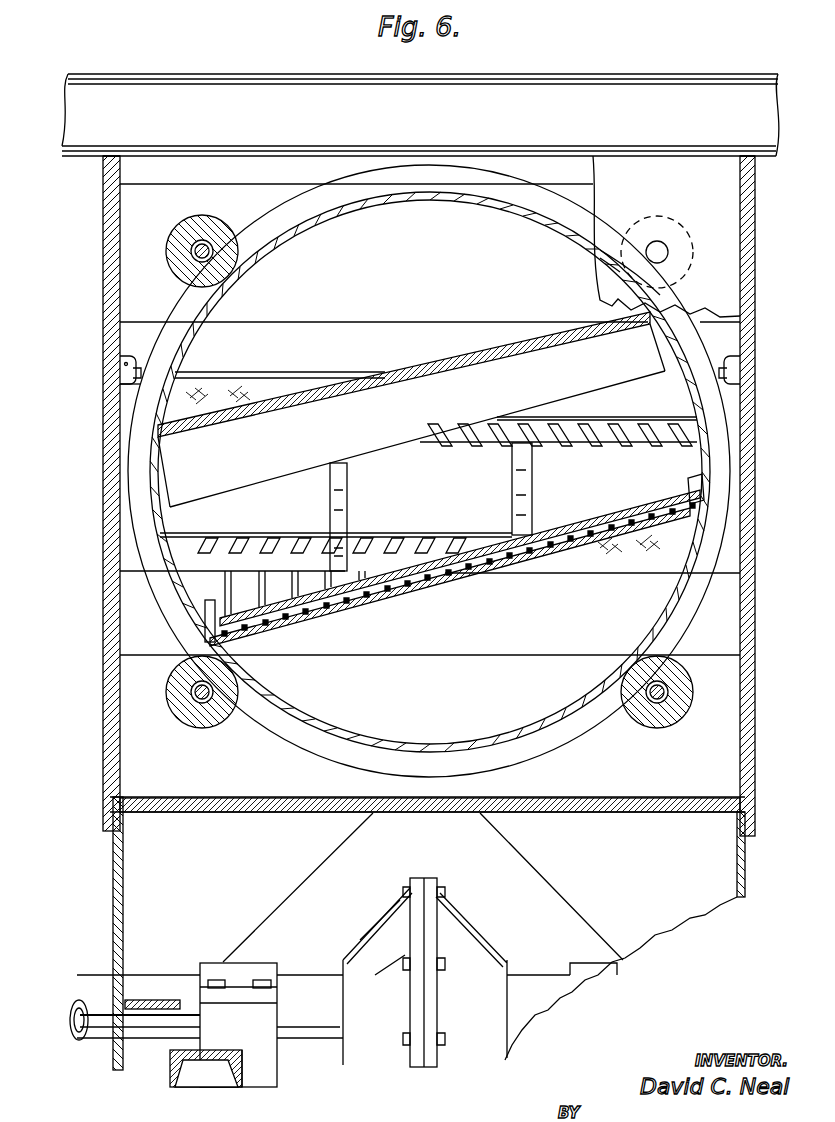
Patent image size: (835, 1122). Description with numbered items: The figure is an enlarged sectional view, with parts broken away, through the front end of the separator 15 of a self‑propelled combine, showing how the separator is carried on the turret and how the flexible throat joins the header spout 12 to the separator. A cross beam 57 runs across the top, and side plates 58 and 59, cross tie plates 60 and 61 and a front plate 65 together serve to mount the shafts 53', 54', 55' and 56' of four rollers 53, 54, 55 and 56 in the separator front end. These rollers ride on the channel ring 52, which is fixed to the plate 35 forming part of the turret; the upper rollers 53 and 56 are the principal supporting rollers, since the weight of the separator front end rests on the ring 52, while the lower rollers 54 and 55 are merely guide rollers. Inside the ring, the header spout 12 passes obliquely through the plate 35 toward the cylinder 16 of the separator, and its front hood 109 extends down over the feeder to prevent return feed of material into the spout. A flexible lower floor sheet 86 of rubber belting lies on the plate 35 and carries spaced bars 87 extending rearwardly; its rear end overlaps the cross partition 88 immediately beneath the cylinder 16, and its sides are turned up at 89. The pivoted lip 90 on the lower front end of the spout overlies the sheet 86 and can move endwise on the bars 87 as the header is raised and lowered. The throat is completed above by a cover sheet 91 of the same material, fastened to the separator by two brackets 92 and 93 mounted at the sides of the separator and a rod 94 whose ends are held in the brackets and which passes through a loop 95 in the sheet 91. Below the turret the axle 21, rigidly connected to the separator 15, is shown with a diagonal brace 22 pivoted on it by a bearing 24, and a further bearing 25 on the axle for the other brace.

The cross beam 57 is at (167, 92).
The side plate 58 is at (103, 229).
The front plate 65 is at (745, 200).
The separator 15 is at (93, 503).
The side plate 59 is at (752, 410).
The cross tie plate 60 is at (222, 190).
The cross tie plate 61 is at (454, 662).
The channel ring 52 is at (345, 742).
The roller 53 is at (189, 247).
The roller shaft 53' is at (171, 251).
The roller 54 is at (183, 692).
The roller shaft 54' is at (170, 718).
The roller 55 is at (646, 704).
The roller shaft 55' is at (668, 721).
The roller 56 is at (588, 268).
The roller shaft 56' is at (672, 252).
The bracket 92 is at (118, 346).
The rod 94 is at (130, 388).
The bracket 93 is at (742, 362).
The header spout 12 is at (372, 378).
The front hood of the header spout 109 is at (286, 468).
The loop 95 is at (192, 372).
The cover sheet 91 is at (226, 394).
The cylinder 16 is at (352, 536).
The cross partition 88 is at (130, 587).
The pivoted lip 90 is at (584, 514).
The lower floor sheet 86 is at (310, 614).
The spaced bars 87 is at (286, 622).
The turned-up sides of the sheet 89 is at (688, 472).
The plate 35 is at (620, 240).
The bearing 25 is at (586, 962).
The axle 21 is at (157, 976).
The bearing 24 is at (268, 963).
The diagonal brace 22 is at (221, 1080).